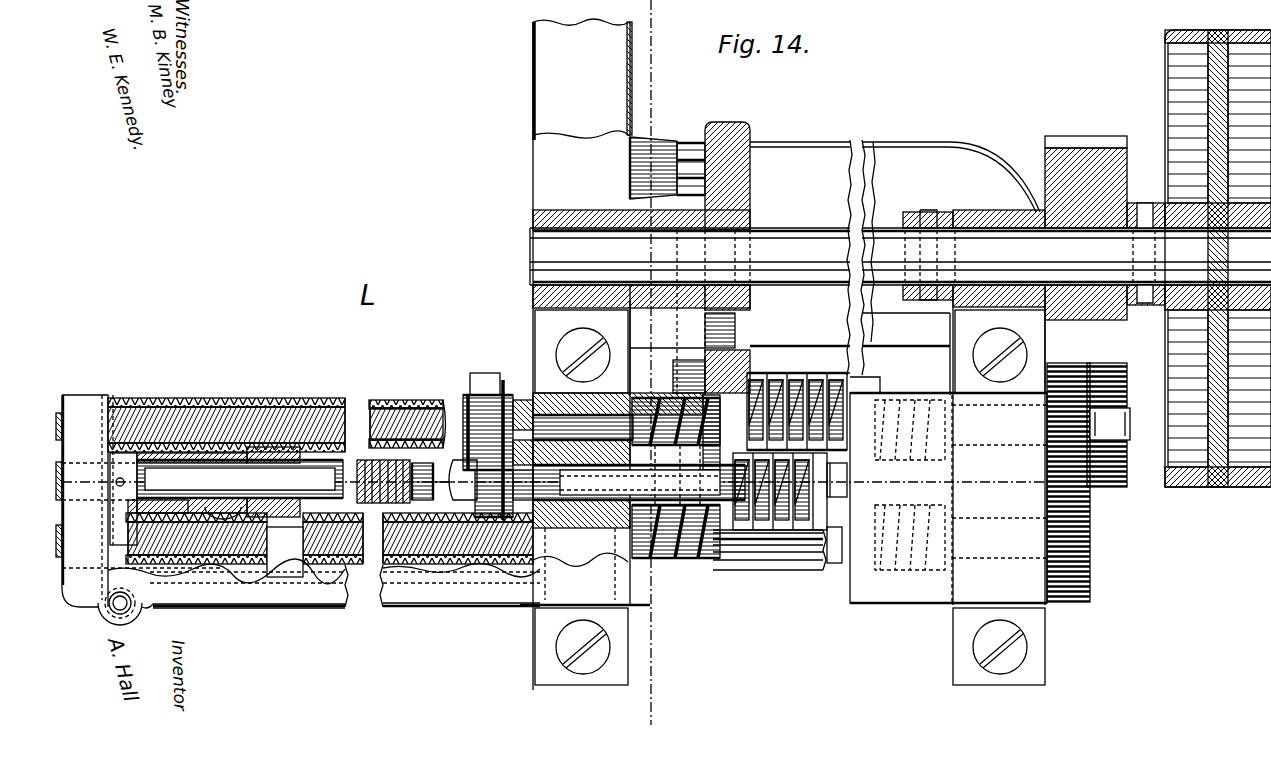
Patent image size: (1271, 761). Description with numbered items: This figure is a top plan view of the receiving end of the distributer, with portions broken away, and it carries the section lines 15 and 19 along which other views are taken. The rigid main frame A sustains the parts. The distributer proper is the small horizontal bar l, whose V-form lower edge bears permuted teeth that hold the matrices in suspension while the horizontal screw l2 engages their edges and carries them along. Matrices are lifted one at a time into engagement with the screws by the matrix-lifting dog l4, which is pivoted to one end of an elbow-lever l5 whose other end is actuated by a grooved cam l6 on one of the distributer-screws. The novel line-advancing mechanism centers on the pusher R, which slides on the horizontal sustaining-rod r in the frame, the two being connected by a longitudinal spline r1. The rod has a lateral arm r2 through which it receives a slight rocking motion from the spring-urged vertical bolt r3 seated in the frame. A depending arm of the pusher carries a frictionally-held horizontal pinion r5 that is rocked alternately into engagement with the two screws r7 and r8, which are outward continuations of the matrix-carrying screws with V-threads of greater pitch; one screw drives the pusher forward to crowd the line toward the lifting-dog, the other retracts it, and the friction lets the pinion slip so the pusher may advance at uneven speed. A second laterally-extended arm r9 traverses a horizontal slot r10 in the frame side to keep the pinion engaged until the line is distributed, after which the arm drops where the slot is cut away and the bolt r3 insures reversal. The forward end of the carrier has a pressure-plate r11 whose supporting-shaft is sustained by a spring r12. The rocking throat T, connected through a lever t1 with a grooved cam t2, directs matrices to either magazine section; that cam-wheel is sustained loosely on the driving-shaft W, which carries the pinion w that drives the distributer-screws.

The section line 15- 15 is at (607, 712).
The section line 19- 19 is at (962, 504).
The driving-shaft W is at (900, 256).
The main frame A is at (897, 267).
The pinion w is at (1078, 152).
The lever t1 is at (690, 145).
The grooved cam t2 is at (750, 210).
The rocking throat T is at (807, 393).
The distributer bar l is at (813, 547).
The horizontal screw l2 is at (690, 570).
The matrix-lifting dog l4 is at (735, 482).
The elbow-lever l5 is at (478, 462).
The grooved cam l6 is at (467, 395).
The pusher R is at (340, 407).
The sustaining-rod r is at (280, 398).
The spline r1 is at (300, 402).
The lateral arm r2 is at (123, 523).
The vertical bolt r3 is at (120, 603).
The horizontal pinion r5 is at (200, 560).
The screw r7 is at (223, 400).
The screw r8 is at (242, 560).
The laterally-extended arm r9 is at (285, 552).
The horizontal slot r10 is at (350, 577).
The pressure-plate r11 is at (423, 487).
The spring r12 is at (368, 466).